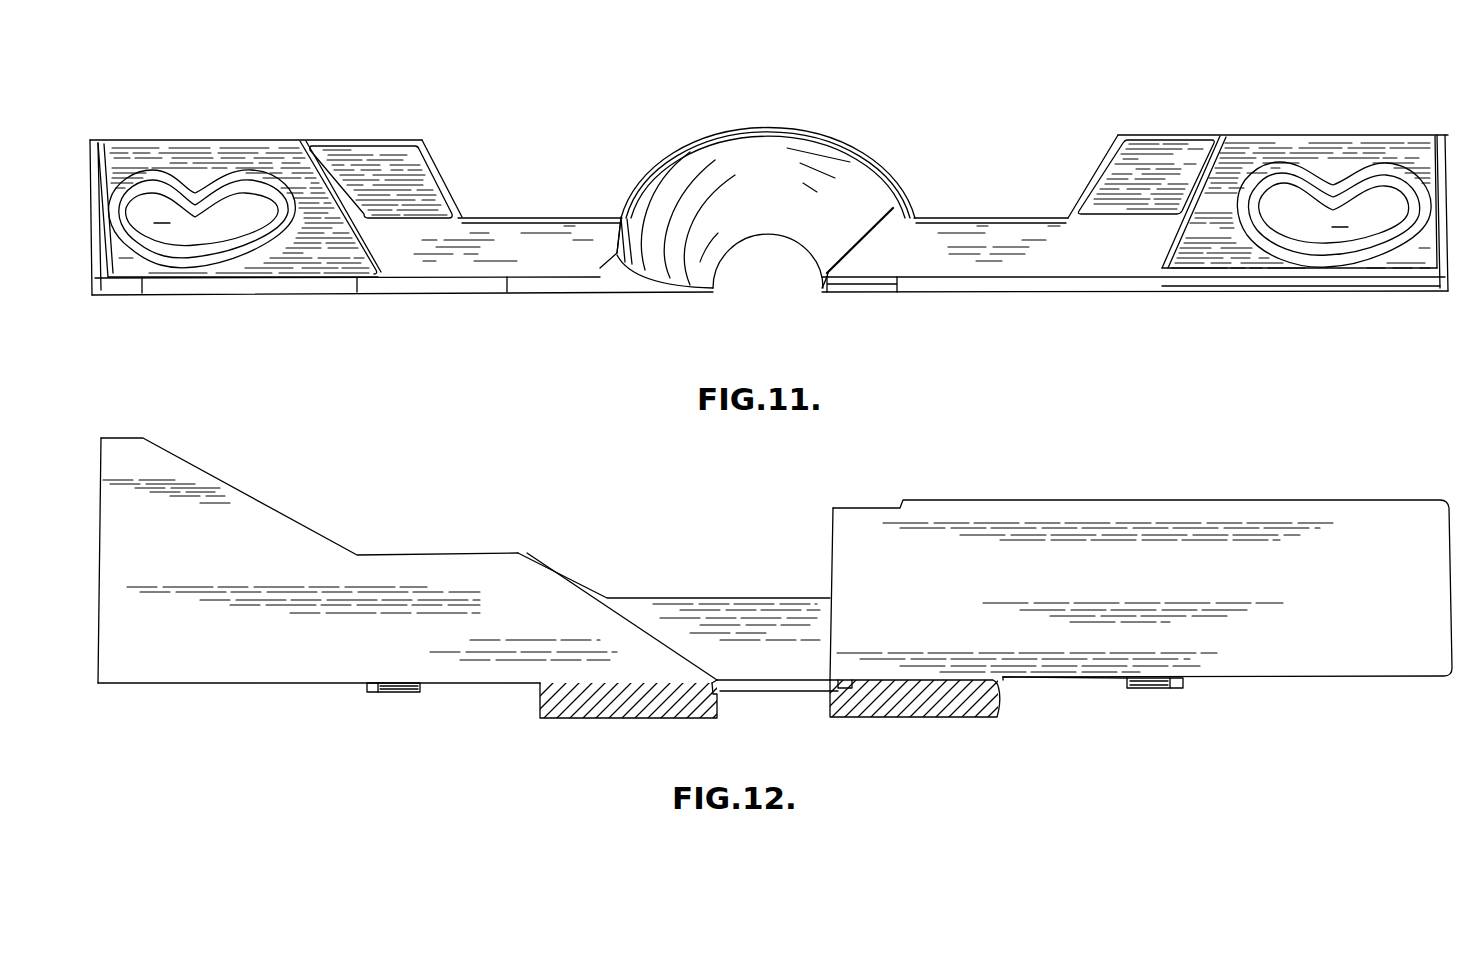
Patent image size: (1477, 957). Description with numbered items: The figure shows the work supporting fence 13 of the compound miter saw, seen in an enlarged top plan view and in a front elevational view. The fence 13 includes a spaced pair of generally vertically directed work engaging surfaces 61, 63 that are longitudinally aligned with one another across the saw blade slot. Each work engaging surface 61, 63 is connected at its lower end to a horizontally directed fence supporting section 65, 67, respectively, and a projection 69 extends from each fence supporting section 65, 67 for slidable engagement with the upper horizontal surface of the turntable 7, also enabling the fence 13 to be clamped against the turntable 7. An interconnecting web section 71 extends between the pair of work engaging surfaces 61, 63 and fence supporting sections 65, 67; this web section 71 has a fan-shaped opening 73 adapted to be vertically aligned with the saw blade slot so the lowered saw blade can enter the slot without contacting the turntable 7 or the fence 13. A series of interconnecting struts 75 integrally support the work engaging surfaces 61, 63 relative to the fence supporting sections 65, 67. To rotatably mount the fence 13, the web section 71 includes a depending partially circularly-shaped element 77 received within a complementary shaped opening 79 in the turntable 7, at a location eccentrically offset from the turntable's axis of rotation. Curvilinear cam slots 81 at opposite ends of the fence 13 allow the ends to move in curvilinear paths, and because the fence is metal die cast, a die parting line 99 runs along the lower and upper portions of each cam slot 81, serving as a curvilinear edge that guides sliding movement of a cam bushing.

In FIG. 12, the turntable 7 is at (966, 722).
In FIG. 11, the work supporting fence 13 is at (926, 138).
In FIG. 12, the work supporting fence 13 is at (980, 722).
In FIG. 12, the work engaging surface 61 is at (310, 648).
In FIG. 12, the work engaging surface 63 is at (1380, 648).
In FIG. 12, the fence supporting section 65 is at (515, 682).
In FIG. 12, the fence supporting section 67 is at (1080, 681).
In FIG. 12, the projection 69 is at (408, 692).
In FIG. 11, the interconnecting web section 71 is at (817, 158).
In FIG. 12, the interconnecting web section 71 is at (777, 630).
In FIG. 11, the fan-shaped opening 73 is at (805, 248).
In FIG. 11, the interconnecting struts 75 is at (90, 142).
In FIG. 12, the depending partially circularly-shaped element 77 is at (838, 692).
In FIG. 12, the complementary shaped opening 79 is at (713, 688).
In FIG. 11, the curvilinear cam slot 81 is at (162, 223).
In FIG. 11, the die parting line 99 is at (192, 222).